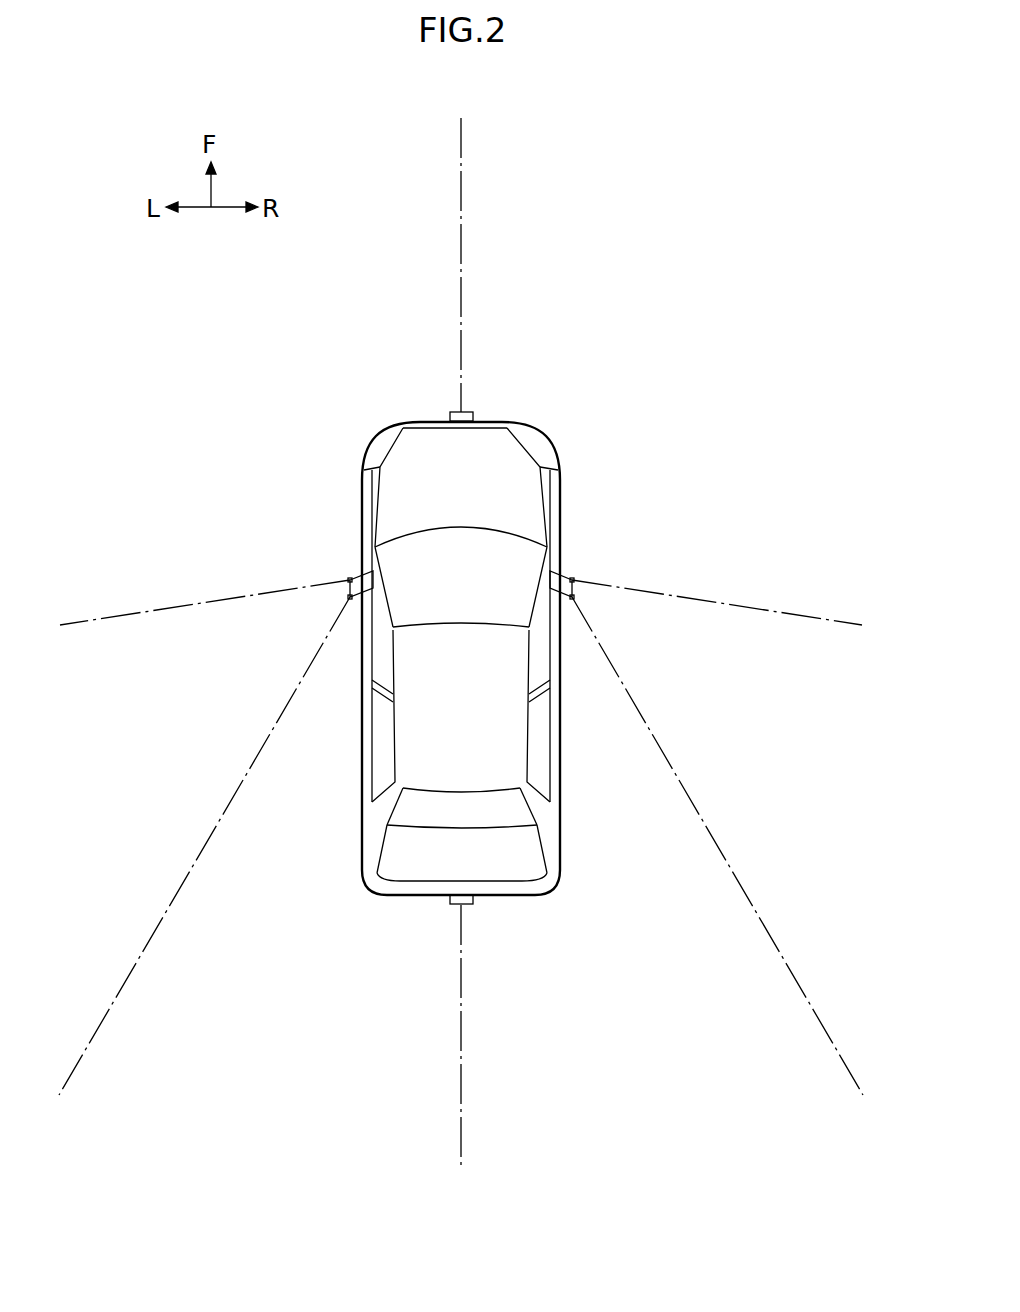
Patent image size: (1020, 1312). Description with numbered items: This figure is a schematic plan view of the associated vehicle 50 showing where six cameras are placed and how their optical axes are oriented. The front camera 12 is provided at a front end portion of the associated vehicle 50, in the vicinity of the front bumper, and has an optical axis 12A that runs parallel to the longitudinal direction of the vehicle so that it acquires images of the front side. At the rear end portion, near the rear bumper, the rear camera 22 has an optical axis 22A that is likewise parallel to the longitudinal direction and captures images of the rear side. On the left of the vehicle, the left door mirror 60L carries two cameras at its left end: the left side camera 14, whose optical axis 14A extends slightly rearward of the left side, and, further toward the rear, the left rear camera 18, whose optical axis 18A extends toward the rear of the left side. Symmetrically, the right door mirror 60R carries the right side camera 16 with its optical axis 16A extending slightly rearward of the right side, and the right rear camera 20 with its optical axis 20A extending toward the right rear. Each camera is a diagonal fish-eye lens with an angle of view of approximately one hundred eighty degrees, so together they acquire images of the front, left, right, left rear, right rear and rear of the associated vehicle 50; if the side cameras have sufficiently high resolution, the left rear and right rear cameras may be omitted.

The front camera 12 is at (473, 414).
The optical axis of front camera 12A is at (462, 270).
The left side camera 14 is at (348, 580).
The optical axis of left side camera 14A is at (200, 603).
The right side camera 16 is at (574, 580).
The optical axis of right side camera 16A is at (752, 607).
The left rear camera 18 is at (348, 597).
The optical axis of left rear camera 18A is at (262, 752).
The right rear camera 20 is at (574, 598).
The optical axis of right rear camera 20A is at (663, 750).
The rear camera 22 is at (473, 902).
The optical axis of rear camera 22A is at (462, 1014).
The associated vehicle 50 is at (560, 499).
The left door mirror 60L is at (358, 576).
The right door mirror 60R is at (565, 575).